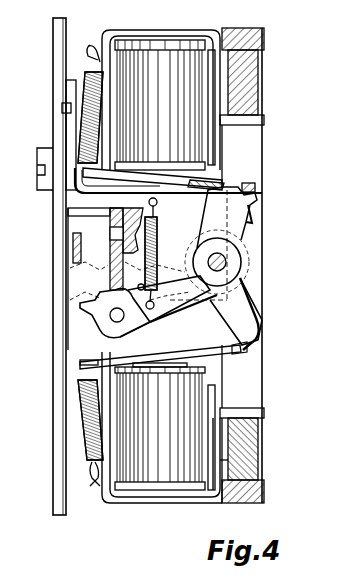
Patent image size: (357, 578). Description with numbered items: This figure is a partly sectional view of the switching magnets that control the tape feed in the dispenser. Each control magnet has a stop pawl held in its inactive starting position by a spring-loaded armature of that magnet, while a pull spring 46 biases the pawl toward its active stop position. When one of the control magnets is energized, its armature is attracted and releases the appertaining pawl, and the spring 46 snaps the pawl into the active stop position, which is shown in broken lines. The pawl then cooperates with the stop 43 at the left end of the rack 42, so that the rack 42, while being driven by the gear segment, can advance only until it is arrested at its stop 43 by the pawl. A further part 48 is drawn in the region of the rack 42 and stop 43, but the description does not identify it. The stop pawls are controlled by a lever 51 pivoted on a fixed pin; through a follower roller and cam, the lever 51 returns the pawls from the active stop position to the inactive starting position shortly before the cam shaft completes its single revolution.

The rack 42 is at (110, 242).
The lever 51 is at (73, 248).
The pull spring 46 is at (159, 240).
The link arm 48 is at (77, 283).
The stop 43 is at (70, 300).